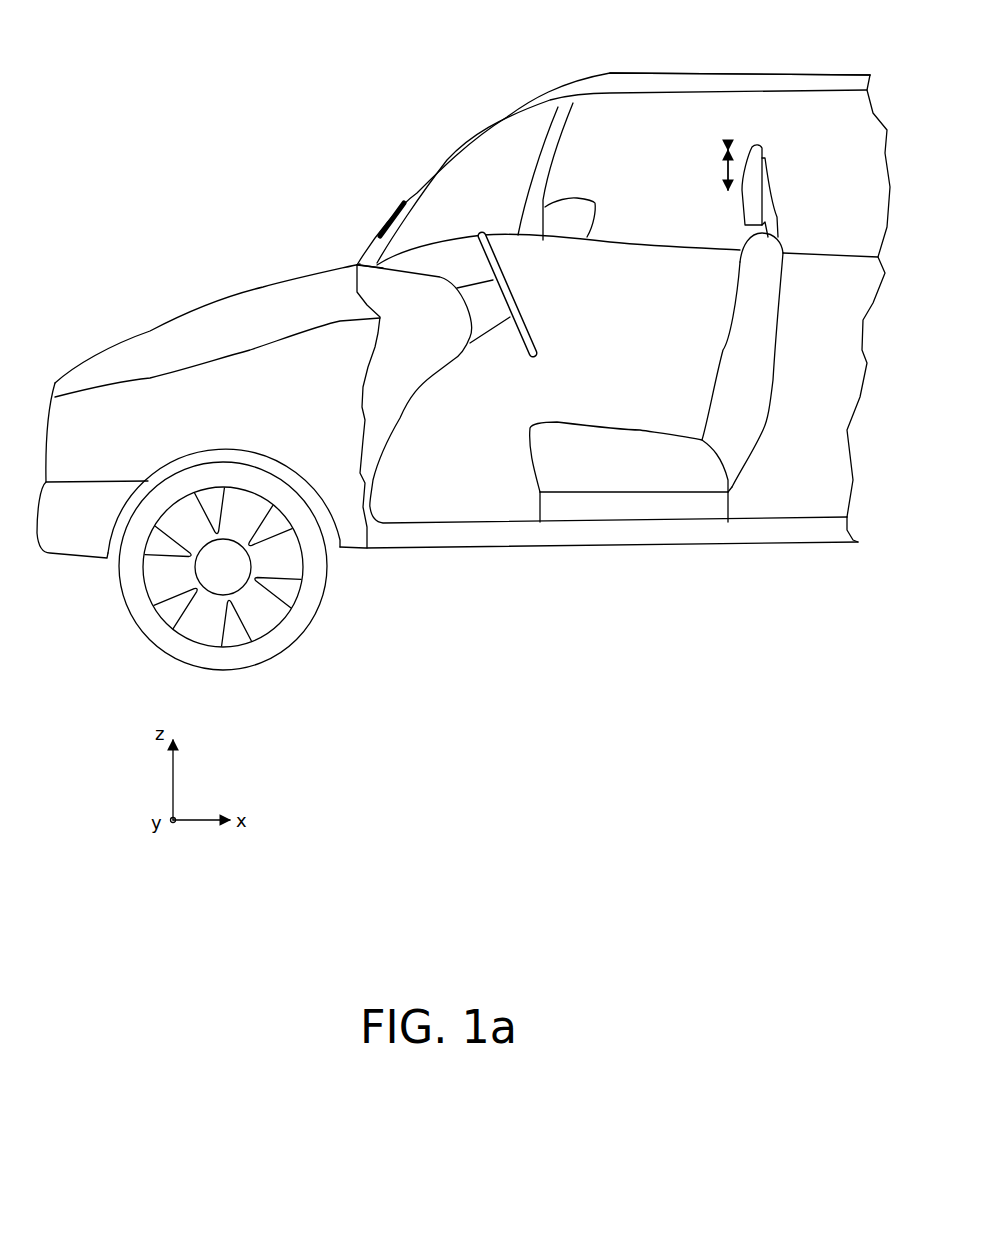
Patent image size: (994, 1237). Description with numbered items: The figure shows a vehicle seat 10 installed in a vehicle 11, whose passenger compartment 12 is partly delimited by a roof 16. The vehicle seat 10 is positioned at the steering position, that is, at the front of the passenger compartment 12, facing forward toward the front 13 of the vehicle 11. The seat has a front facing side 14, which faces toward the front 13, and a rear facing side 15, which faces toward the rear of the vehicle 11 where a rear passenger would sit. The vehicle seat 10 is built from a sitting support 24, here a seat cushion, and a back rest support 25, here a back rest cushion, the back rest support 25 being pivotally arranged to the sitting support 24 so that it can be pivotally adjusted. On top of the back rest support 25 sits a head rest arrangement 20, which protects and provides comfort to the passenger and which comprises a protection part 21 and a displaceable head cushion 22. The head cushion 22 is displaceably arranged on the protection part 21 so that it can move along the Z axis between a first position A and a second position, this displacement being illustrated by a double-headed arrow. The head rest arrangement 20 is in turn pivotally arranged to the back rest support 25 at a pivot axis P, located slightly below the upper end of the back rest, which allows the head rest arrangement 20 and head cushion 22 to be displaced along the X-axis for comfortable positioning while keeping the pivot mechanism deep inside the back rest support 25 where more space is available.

The vehicle seat 10 is at (785, 337).
The vehicle 11 is at (380, 118).
The passenger compartment 12 is at (668, 156).
The front 13 is at (45, 425).
The front facing side 14 is at (722, 341).
The rear facing side 15 is at (773, 378).
The roof 16 is at (685, 75).
The head rest arrangement 20 is at (785, 175).
The protection part 21 is at (777, 220).
The head cushion 22 is at (753, 201).
The sitting support 24 is at (602, 445).
The back rest support 25 is at (740, 428).
The first position A is at (753, 140).
The pivot axis P is at (766, 247).